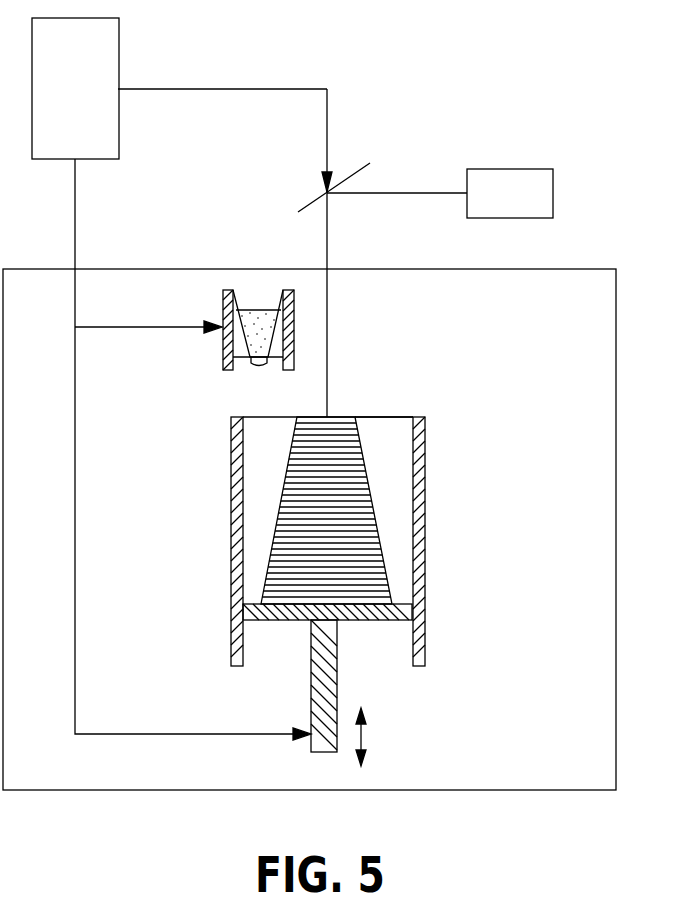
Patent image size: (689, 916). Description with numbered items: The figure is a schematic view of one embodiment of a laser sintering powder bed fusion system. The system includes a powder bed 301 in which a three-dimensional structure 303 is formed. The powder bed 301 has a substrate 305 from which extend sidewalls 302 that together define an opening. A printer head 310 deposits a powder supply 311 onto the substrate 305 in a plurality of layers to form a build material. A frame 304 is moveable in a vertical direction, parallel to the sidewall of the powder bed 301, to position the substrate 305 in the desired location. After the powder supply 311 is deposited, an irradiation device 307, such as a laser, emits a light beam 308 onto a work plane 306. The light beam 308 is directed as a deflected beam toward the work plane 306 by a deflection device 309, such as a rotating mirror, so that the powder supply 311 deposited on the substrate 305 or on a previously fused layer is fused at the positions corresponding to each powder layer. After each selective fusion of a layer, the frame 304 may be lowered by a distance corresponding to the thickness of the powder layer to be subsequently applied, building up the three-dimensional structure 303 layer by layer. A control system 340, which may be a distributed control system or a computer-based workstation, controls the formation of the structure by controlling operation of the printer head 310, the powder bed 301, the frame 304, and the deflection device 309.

The control system 340 is at (118, 57).
The irradiation device 307 is at (498, 170).
The light beam 308 is at (374, 193).
The deflection device 309 is at (368, 172).
The printer head 310 is at (223, 303).
The powder supply 311 is at (257, 312).
The powder bed 301 is at (427, 485).
The sidewalls 302 is at (422, 417).
The three-dimensional structure 303 is at (407, 552).
The frame 304 is at (356, 646).
The substrate 305 is at (402, 602).
The work plane 306 is at (377, 416).